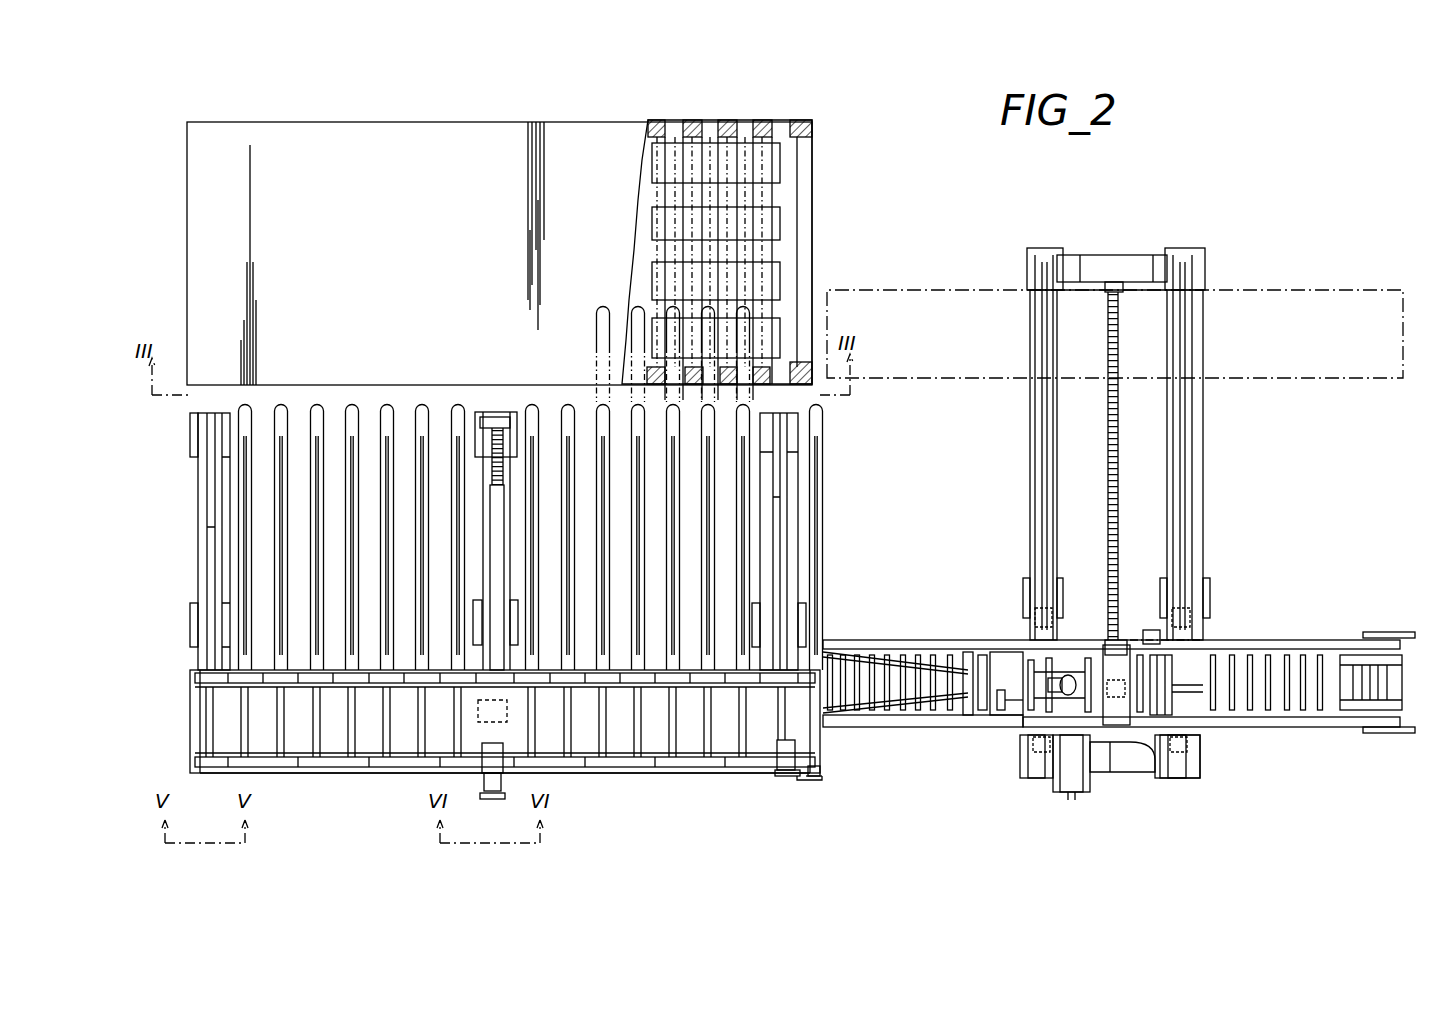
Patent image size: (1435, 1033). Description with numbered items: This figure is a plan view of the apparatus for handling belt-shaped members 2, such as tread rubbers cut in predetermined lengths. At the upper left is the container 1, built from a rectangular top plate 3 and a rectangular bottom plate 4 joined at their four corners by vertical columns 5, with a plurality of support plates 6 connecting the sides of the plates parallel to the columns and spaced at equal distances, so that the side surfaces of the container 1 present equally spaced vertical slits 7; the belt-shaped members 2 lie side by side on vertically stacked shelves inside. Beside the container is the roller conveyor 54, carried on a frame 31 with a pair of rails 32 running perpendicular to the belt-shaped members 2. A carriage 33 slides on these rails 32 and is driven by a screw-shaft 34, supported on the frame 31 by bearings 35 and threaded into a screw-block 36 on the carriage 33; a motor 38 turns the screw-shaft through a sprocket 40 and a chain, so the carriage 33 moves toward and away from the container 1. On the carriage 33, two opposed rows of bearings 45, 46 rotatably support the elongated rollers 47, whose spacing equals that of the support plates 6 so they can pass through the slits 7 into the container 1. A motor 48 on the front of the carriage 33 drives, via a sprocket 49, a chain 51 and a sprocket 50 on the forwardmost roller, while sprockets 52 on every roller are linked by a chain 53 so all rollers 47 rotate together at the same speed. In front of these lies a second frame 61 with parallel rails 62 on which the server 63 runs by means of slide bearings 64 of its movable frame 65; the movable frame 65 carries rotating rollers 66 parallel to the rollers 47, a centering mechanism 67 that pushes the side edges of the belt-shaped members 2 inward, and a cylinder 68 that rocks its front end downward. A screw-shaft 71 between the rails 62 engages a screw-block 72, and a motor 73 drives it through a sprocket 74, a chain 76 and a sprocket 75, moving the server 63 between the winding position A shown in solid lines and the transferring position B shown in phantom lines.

The container 1 is at (612, 118).
The belt-shaped members 2 is at (655, 213).
The top plate 3 is at (580, 122).
The bottom plate 4 is at (800, 152).
The vertical columns 5 is at (807, 120).
The support plates 6 is at (723, 120).
The vertical slits 7 is at (773, 120).
The frame 31 is at (200, 508).
The rails 32 is at (208, 476).
The carriage 33 is at (192, 733).
The screw-shaft 34 is at (505, 470).
The bearings 35 is at (497, 412).
The screw-block 36 is at (508, 705).
The motor 38 is at (476, 790).
The sprocket 40 is at (497, 800).
The bearings 45 is at (297, 770).
The bearings 46 is at (235, 680).
The elongated rollers 47 is at (318, 404).
The motor 48 is at (818, 750).
The sprocket 49 is at (780, 778).
The sprocket 50 is at (818, 778).
The chain 51 is at (802, 781).
The sprockets 52 is at (380, 772).
The chain 53 is at (330, 770).
The roller conveyor 54 is at (690, 780).
The frame 61 is at (1200, 518).
The rails 62 is at (1042, 455).
The server 63 is at (1316, 640).
The slide bearings 64 is at (1025, 630).
The movable frame 65 is at (1290, 727).
The rotating rollers 66 is at (1290, 652).
The centering mechanism 67 is at (868, 645).
The cylinder 68 is at (1150, 640).
The screw-shaft 71 is at (1118, 470).
The screw-block 72 is at (1107, 680).
The motor 73 is at (1057, 790).
The sprocket 74 is at (1072, 800).
The sprocket 75 is at (1150, 778).
The chain 76 is at (1105, 762).
The winding position A is at (1372, 735).
The transferring position B is at (760, 197).